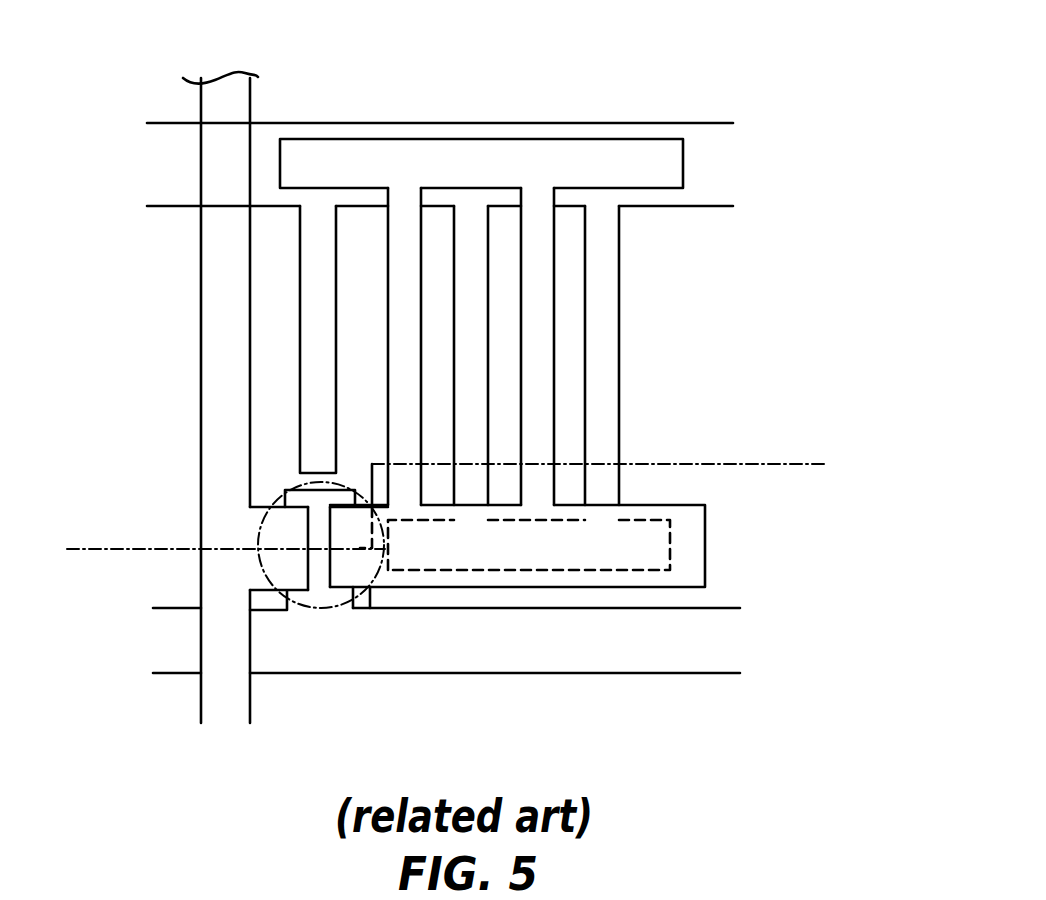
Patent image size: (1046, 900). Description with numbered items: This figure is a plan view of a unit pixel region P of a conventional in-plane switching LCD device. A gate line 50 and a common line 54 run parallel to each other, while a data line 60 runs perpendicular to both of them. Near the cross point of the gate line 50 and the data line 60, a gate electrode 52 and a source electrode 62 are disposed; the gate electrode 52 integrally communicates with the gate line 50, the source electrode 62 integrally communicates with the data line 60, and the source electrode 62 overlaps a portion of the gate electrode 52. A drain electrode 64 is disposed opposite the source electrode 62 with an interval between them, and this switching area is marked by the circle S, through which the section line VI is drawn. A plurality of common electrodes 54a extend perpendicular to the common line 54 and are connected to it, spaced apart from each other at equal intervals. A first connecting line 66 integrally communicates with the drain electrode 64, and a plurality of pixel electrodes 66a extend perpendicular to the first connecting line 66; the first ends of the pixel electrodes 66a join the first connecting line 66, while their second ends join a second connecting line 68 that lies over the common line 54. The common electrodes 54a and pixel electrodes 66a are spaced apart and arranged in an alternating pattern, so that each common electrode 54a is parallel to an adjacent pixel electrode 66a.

The gate line 50 is at (493, 663).
The gate electrode 52 is at (320, 575).
The common line 54 is at (698, 125).
The common electrode 54a is at (308, 270).
The data line 60 is at (210, 482).
The source electrode 62 is at (267, 603).
The drain electrode 64 is at (350, 560).
The first connecting line 66 is at (698, 575).
The pixel electrode 66a is at (410, 386).
The second connecting line 68 is at (493, 148).
The thin film transistor region S is at (260, 557).
The unit pixel region P is at (728, 334).
The section line VI- VI is at (86, 555).